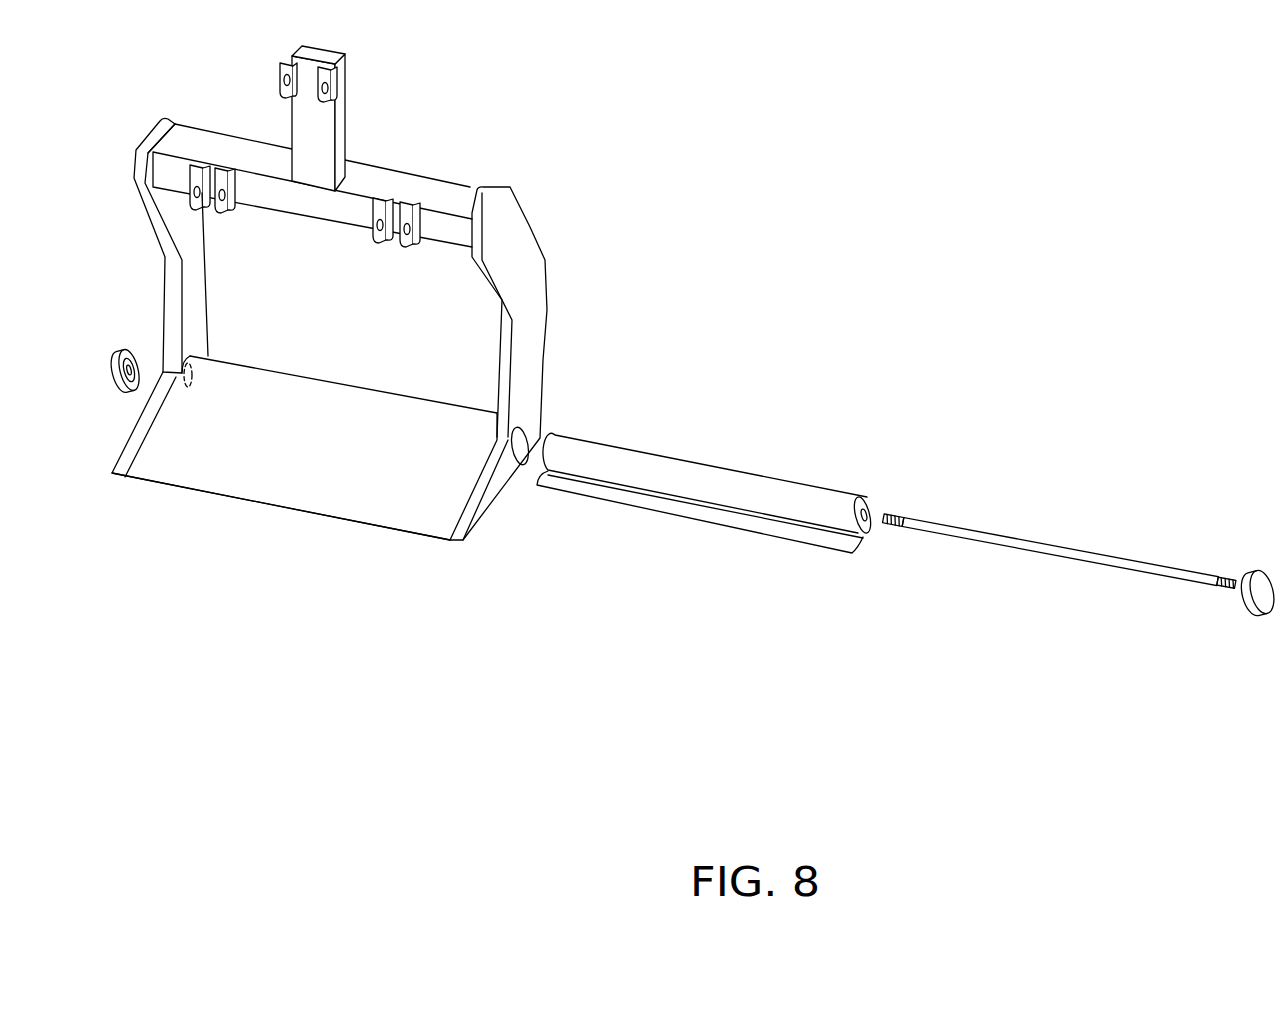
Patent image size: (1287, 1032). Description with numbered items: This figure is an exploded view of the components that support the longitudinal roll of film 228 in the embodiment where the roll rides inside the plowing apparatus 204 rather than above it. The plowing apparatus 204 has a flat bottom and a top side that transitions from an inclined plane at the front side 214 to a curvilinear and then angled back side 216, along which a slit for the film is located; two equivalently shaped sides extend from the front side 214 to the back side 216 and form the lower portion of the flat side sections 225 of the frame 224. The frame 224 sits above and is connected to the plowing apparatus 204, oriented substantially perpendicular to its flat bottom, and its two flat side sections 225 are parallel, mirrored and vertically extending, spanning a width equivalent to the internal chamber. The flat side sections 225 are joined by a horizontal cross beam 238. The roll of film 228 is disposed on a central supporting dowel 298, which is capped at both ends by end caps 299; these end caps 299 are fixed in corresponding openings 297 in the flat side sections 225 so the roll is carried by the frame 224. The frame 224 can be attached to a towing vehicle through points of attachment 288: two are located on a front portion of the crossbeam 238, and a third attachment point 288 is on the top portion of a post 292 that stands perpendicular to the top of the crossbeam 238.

The plowing apparatus 204 is at (445, 480).
The front side 214 is at (278, 507).
The back side 216 is at (333, 380).
The frame 224 is at (547, 293).
The flat side sections 225 is at (193, 237).
The longitudinal roll of film 228 is at (698, 460).
The horizontal cross beam 238 is at (458, 193).
The points of attachment 288 is at (331, 88).
The post 292 is at (320, 138).
The openings 297 is at (188, 386).
The central supporting dowel 298 is at (1052, 543).
The end caps 299 is at (118, 352).